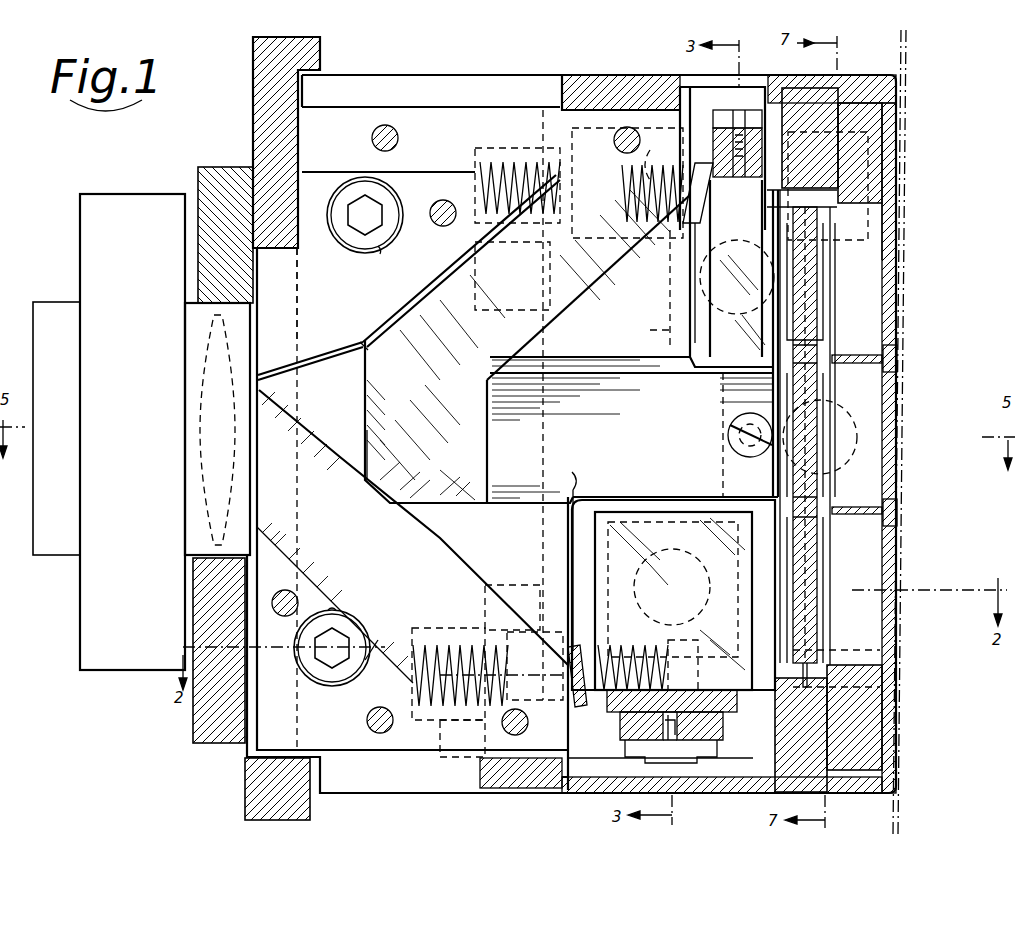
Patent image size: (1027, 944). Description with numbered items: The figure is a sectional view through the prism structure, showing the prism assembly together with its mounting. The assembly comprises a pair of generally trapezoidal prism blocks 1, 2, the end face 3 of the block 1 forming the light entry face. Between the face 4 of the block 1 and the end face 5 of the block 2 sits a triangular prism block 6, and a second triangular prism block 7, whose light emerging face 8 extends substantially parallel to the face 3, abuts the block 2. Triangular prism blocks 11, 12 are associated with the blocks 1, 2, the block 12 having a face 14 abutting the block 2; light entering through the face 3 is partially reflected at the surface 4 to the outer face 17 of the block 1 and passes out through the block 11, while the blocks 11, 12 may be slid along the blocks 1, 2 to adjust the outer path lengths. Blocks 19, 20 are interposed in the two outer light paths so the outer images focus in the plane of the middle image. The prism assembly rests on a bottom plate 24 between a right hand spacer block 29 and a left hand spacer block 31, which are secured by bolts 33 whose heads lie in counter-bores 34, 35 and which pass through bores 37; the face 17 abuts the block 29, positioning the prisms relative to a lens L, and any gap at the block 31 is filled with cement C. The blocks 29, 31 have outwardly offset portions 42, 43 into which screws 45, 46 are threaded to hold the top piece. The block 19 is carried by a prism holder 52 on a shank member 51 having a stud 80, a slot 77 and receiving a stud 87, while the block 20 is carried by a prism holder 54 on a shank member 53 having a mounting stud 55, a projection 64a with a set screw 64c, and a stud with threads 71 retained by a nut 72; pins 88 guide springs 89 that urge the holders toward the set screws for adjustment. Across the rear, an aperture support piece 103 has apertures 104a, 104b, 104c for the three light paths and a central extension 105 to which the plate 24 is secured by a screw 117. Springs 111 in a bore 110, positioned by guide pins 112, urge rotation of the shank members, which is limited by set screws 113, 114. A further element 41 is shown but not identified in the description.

The prism block 1 is at (485, 510).
The prism block 2 is at (490, 330).
The end face 3 is at (258, 456).
The face 4 is at (359, 420).
The end face 5 is at (70, 616).
The triangularly shaped prism block 6 is at (336, 350).
The triangularly shaped prism block 7 is at (465, 453).
The light emerging face 8 is at (495, 422).
The triangularly shaped prism block 11 is at (498, 512).
The triangularly shaped prism block 12 is at (630, 323).
The face 14 is at (588, 242).
The outer face 17 is at (283, 553).
The block 19 is at (641, 510).
The block 20 is at (720, 355).
The bottom plate 24 is at (556, 515).
The right hand spacer block 29 is at (378, 640).
The left hand spacer block 31 is at (368, 303).
The bolts 33 is at (361, 222).
The counter-bore 34 is at (336, 610).
The counter-bore 35 is at (382, 242).
The bores 37 is at (617, 82).
The pin 41 is at (436, 203).
The outwardly offset portion 42 is at (445, 728).
The outwardly offset portion 43 is at (430, 116).
The screws 45 is at (368, 712).
The screws 46 is at (396, 148).
The shank member 51 is at (723, 731).
The prism holder 52 is at (740, 706).
The shank member 53 is at (770, 150).
The prism holder 54 is at (748, 180).
The mounting stud 55 is at (690, 312).
The projection 64a is at (850, 242).
The set screw 64c is at (888, 173).
The external threads 71 is at (735, 108).
The nut 72 is at (740, 108).
The slot 77 is at (675, 740).
The stud 80 is at (695, 555).
The stud 87 is at (648, 765).
The pin 88 is at (628, 240).
The springs 89 is at (650, 150).
The aperture support piece 103 is at (872, 742).
The aperture 104a is at (872, 385).
The aperture 104b is at (872, 540).
The aperture 104c is at (877, 257).
The extension 105 is at (723, 405).
The bore 110 is at (420, 628).
The springs 111 is at (495, 150).
The guide pins 112 is at (512, 622).
The set screw 113 is at (857, 650).
The set screw 114 is at (876, 234).
The screw 117 is at (735, 440).
The cement or filler material C is at (372, 345).
The lens L is at (198, 495).